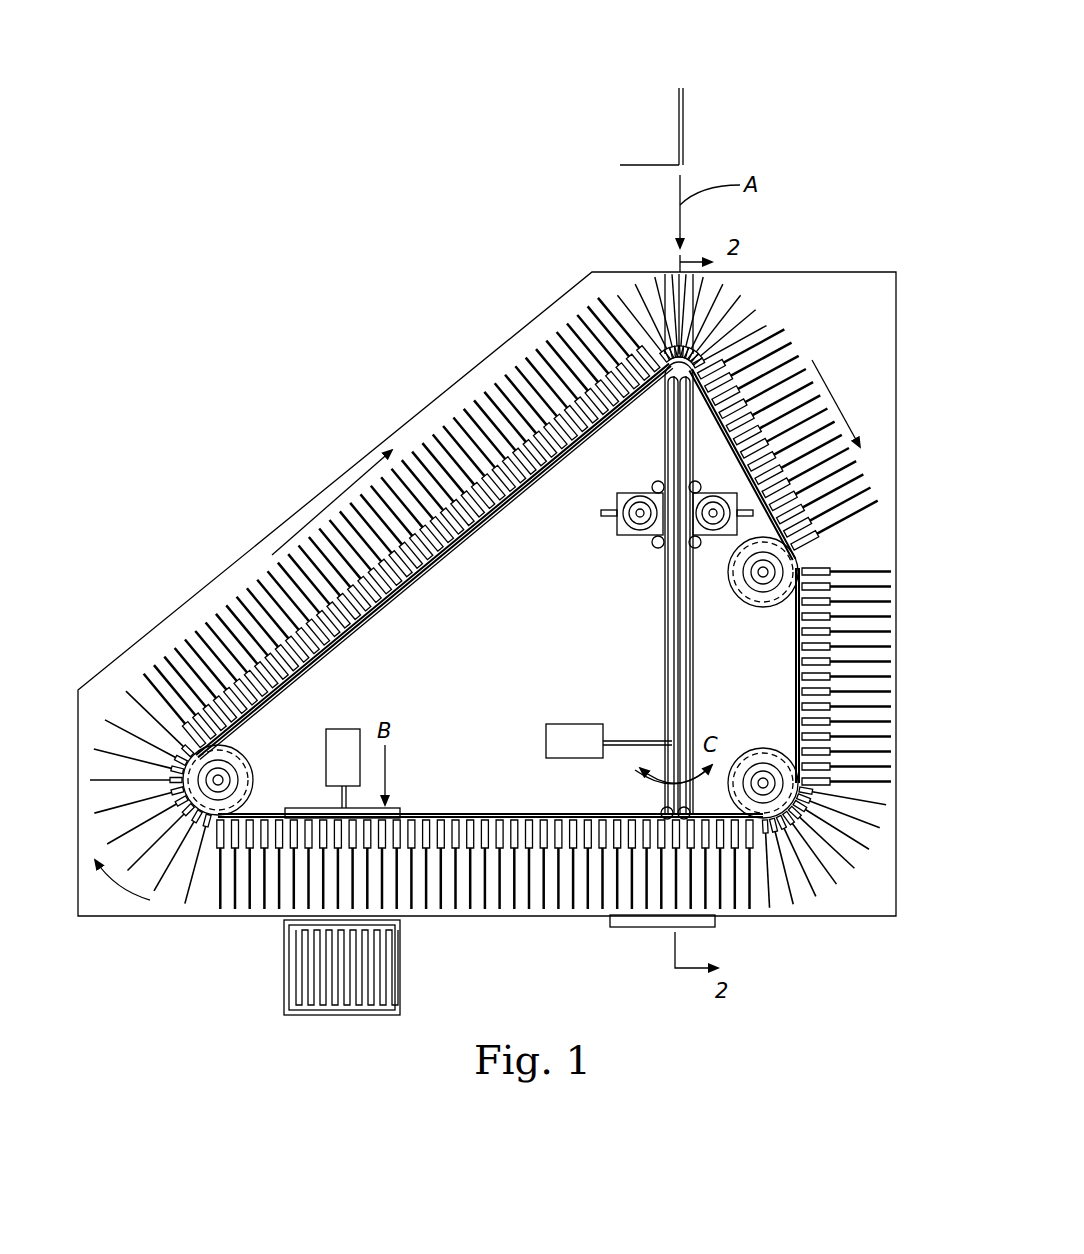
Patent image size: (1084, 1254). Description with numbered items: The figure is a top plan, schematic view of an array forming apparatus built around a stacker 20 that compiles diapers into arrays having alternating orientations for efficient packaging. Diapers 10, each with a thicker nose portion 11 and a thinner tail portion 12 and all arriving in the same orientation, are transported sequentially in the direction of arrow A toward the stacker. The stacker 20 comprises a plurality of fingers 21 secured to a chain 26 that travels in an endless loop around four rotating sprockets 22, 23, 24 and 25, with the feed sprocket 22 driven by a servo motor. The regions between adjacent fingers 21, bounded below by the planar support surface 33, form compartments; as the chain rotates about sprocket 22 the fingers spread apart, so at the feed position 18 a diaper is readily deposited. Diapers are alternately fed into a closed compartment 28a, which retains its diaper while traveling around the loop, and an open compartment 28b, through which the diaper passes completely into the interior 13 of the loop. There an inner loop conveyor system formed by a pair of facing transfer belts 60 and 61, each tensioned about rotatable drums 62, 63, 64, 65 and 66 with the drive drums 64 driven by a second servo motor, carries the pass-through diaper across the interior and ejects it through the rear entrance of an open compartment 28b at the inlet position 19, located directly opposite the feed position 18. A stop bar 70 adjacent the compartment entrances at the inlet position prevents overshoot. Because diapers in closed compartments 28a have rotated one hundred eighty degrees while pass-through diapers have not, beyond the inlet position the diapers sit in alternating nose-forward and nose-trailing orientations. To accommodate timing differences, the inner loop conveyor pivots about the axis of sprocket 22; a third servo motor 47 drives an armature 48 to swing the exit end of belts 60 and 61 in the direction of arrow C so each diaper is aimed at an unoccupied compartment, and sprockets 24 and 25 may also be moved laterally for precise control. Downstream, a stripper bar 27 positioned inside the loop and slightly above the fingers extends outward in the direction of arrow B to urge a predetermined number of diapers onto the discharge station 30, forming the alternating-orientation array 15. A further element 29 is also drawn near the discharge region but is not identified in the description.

The diaper 10 is at (698, 108).
The nose portion 11 is at (613, 165).
The tail portion 12 is at (684, 85).
The interior of the closed loop 13 is at (536, 595).
The array 15 is at (362, 1000).
The feed position 18 is at (663, 248).
The inlet position 19 is at (625, 815).
The stacker 20 is at (760, 930).
The fingers 21 is at (515, 380).
The feed sprocket 22 is at (666, 385).
The sprocket 23 is at (767, 603).
The sprocket 24 is at (762, 760).
The sprocket 25 is at (236, 768).
The chain 26 is at (457, 545).
The stripper bar 27 is at (400, 812).
The closed compartment 28a is at (616, 293).
The open compartment 28b is at (648, 282).
The discharge opening 29 is at (410, 920).
The discharge station 30 is at (316, 1018).
The planar support surface 33 is at (883, 900).
The third servo motor 47 is at (570, 733).
The armature 48 is at (645, 740).
The transfer belt 60 is at (663, 650).
The transfer belt 61 is at (692, 678).
The rotatable drum 62 is at (722, 345).
The rotatable drum 63 is at (690, 484).
The drive drum 64 is at (640, 520).
The rotatable drum 65 is at (692, 548).
The rotatable drum 66 is at (680, 808).
The stop bar 70 is at (633, 930).